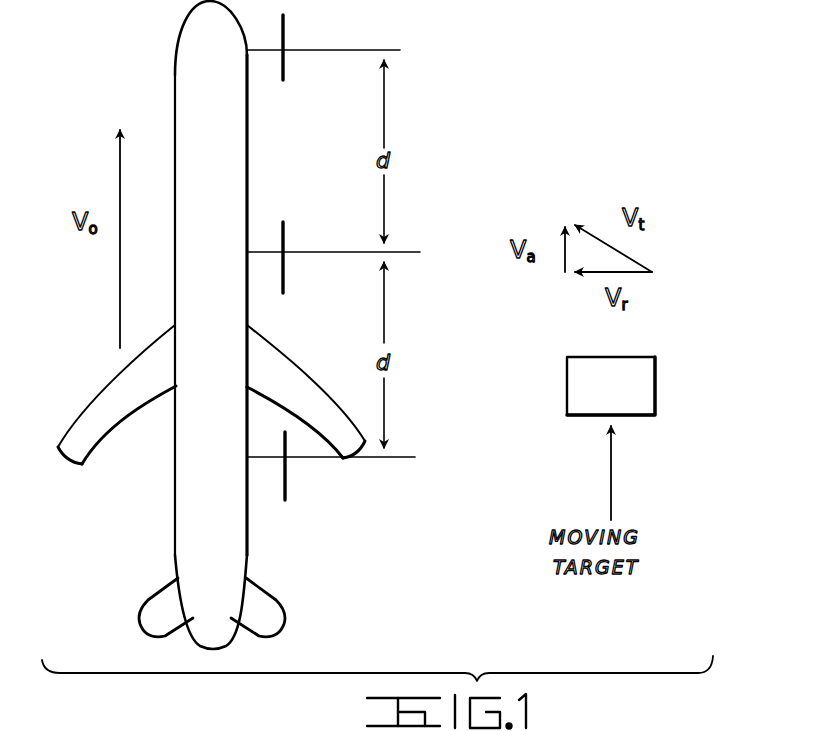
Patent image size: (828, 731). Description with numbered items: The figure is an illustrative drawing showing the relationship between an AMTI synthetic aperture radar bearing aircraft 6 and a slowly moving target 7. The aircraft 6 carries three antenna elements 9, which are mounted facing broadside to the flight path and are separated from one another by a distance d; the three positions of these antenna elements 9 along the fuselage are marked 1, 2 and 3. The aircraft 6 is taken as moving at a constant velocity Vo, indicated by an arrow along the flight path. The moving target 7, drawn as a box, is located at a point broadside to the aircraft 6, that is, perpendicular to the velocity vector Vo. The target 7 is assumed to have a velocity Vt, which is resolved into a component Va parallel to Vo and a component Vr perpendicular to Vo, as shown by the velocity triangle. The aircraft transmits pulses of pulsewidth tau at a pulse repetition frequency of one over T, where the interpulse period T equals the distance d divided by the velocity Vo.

The first sensor position 1 is at (294, 41).
The second sensor position 2 is at (296, 252).
The third sensor position 3 is at (297, 466).
The aircraft 6 is at (175, 26).
The moving target 7 is at (567, 386).
The antenna elements 9 is at (288, 70).